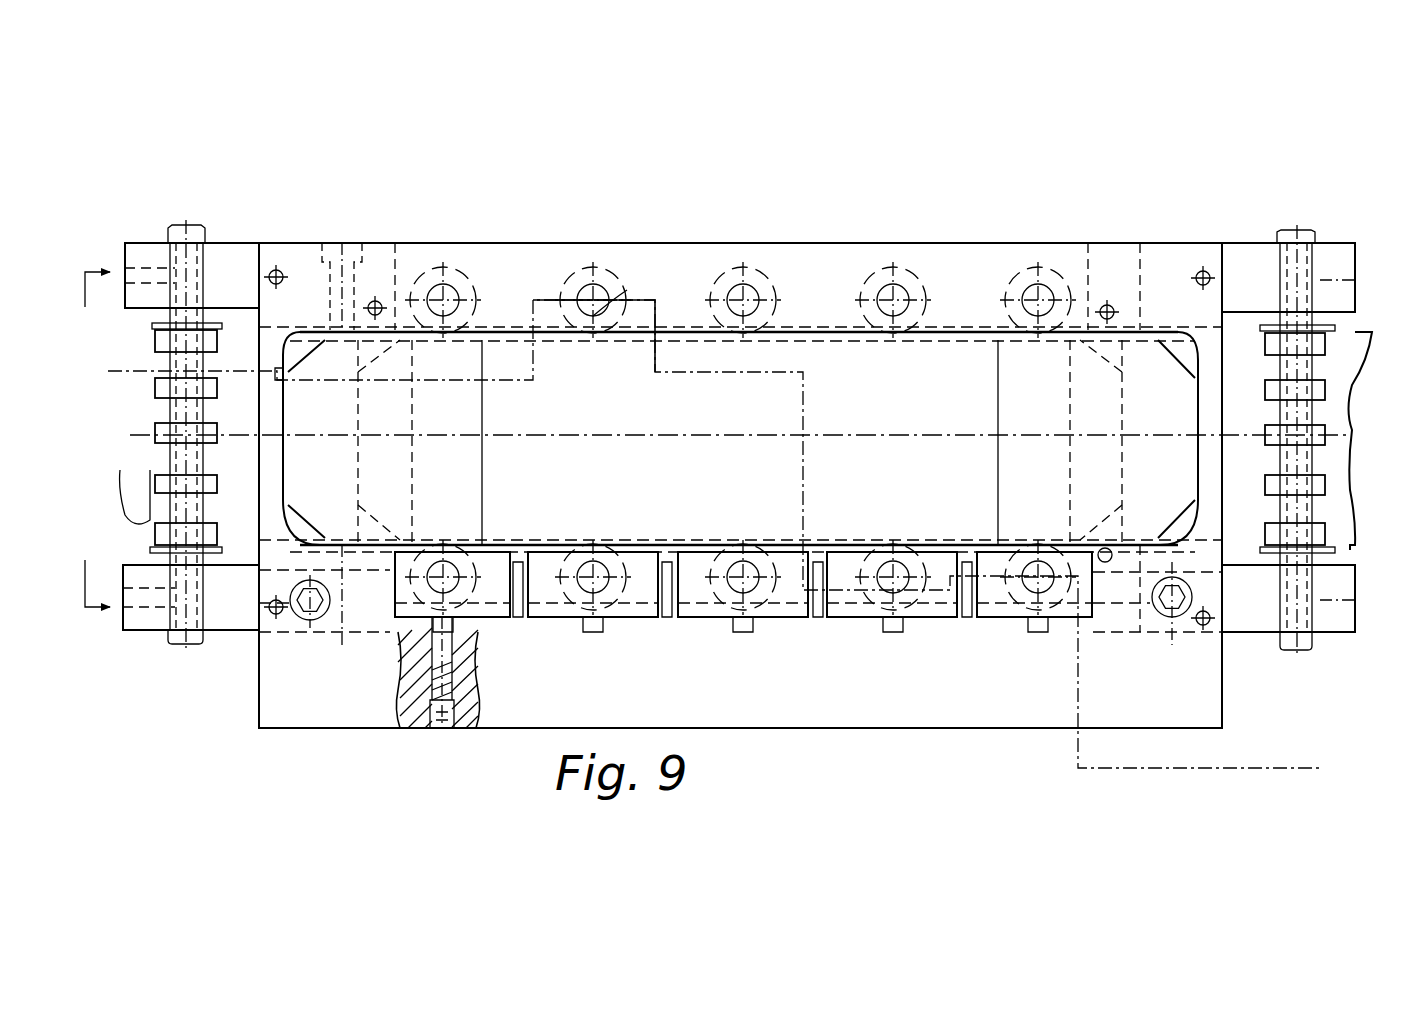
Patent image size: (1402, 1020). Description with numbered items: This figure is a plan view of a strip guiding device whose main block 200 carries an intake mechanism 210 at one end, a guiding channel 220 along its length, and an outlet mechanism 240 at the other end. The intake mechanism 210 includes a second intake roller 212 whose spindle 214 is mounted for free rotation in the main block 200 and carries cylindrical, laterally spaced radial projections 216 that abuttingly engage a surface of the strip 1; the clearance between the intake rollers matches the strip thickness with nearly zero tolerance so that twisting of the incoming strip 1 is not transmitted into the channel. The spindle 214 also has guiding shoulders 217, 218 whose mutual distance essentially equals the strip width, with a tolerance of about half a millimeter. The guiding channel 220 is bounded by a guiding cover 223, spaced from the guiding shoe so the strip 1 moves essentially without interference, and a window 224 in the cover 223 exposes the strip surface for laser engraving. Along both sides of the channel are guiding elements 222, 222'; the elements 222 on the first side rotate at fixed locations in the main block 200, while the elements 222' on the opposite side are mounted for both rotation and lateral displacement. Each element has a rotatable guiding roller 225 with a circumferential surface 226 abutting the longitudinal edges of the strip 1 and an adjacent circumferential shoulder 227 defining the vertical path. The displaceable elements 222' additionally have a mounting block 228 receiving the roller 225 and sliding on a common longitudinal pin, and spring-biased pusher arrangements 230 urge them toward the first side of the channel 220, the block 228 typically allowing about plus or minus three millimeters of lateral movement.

The strip 1 is at (130, 515).
The main block 200 is at (958, 272).
The intake mechanism 210 is at (223, 230).
The second intake roller 212 is at (198, 650).
The spindle 214 is at (180, 645).
The radial projections 216 is at (160, 535).
The guiding shoulder 217 is at (152, 326).
The guiding shoulder 218 is at (150, 551).
The guiding channel 220 is at (753, 233).
The guiding elements 222 is at (762, 262).
The displaceable guiding elements 222' is at (703, 616).
The guiding cover 223 is at (468, 370).
The window 224 is at (752, 482).
The guiding roller 225 is at (440, 552).
The circumferential surface 226 is at (656, 302).
The circumferential shoulder 227 is at (628, 290).
The mounting block 228 is at (495, 618).
The spring-biased pusher arrangement 230 is at (464, 683).
The outlet mechanism 240 is at (1322, 224).